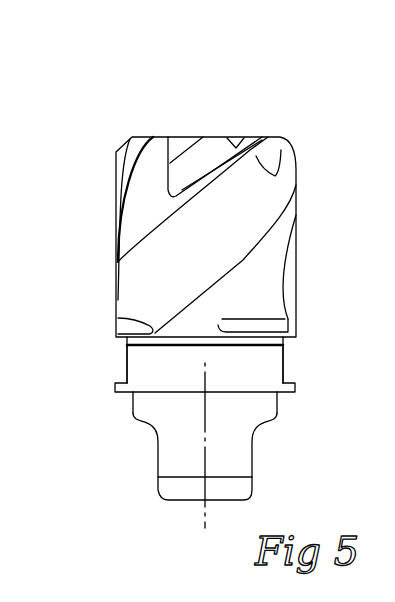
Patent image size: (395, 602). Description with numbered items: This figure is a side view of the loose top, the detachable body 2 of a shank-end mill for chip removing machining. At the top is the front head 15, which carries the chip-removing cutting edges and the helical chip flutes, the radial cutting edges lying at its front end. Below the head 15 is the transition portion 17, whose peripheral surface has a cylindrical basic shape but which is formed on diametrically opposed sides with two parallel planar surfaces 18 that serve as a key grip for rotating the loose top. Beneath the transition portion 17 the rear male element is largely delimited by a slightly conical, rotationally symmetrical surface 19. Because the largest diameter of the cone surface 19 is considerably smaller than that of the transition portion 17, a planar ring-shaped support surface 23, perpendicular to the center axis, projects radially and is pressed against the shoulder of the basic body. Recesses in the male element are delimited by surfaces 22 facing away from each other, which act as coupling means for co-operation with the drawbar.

The detachable body 2 is at (175, 200).
The front head 15 is at (98, 240).
The transition portion 17 is at (176, 380).
The planar surfaces 18 is at (127, 351).
The rotationally symmetrical surface 19 is at (133, 405).
The coupling means surfaces 22 is at (145, 447).
The ring-shaped support surface 23 is at (288, 402).